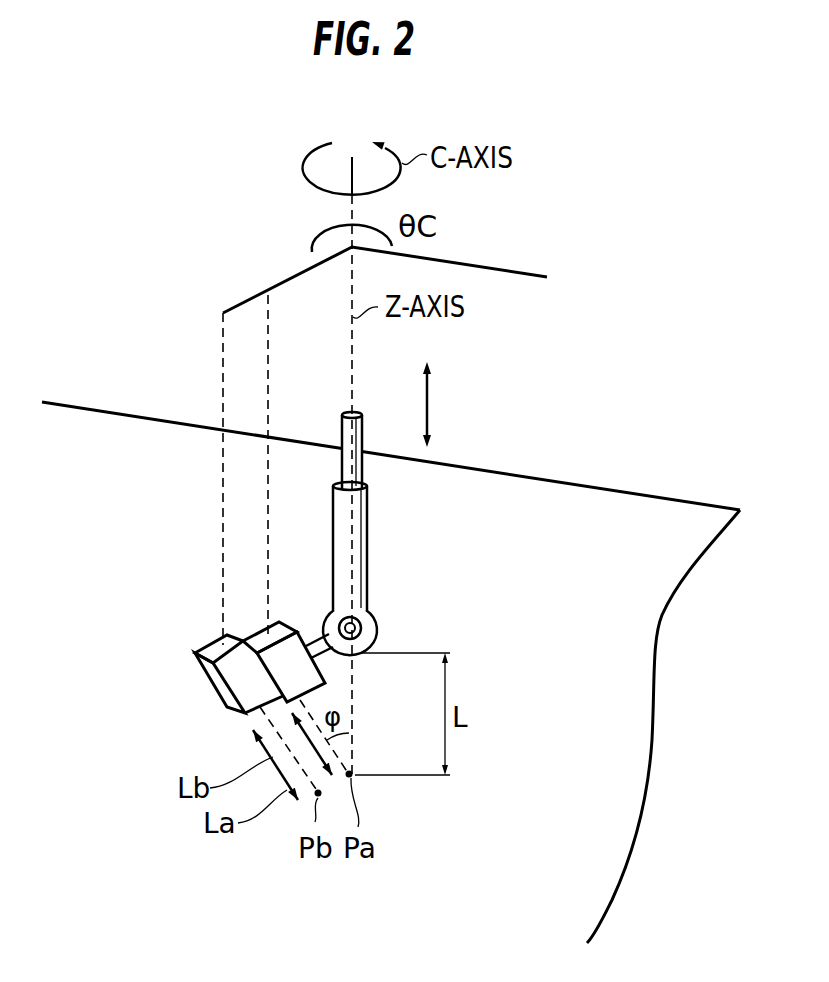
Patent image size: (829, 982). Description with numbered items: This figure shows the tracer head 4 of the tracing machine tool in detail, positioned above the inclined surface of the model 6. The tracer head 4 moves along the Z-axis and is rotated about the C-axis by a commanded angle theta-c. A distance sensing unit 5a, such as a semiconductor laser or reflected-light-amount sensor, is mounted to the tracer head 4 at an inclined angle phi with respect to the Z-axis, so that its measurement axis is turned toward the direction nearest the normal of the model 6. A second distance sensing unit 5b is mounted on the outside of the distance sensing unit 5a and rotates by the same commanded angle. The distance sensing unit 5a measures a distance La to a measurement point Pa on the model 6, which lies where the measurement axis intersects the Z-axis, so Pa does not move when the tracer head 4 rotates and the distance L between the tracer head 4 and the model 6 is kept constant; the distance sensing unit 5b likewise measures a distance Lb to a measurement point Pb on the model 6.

The tracer head 4 is at (367, 520).
The distance sensing unit 5a is at (232, 708).
The distance sensing unit 5b is at (217, 678).
The model 6 is at (588, 483).